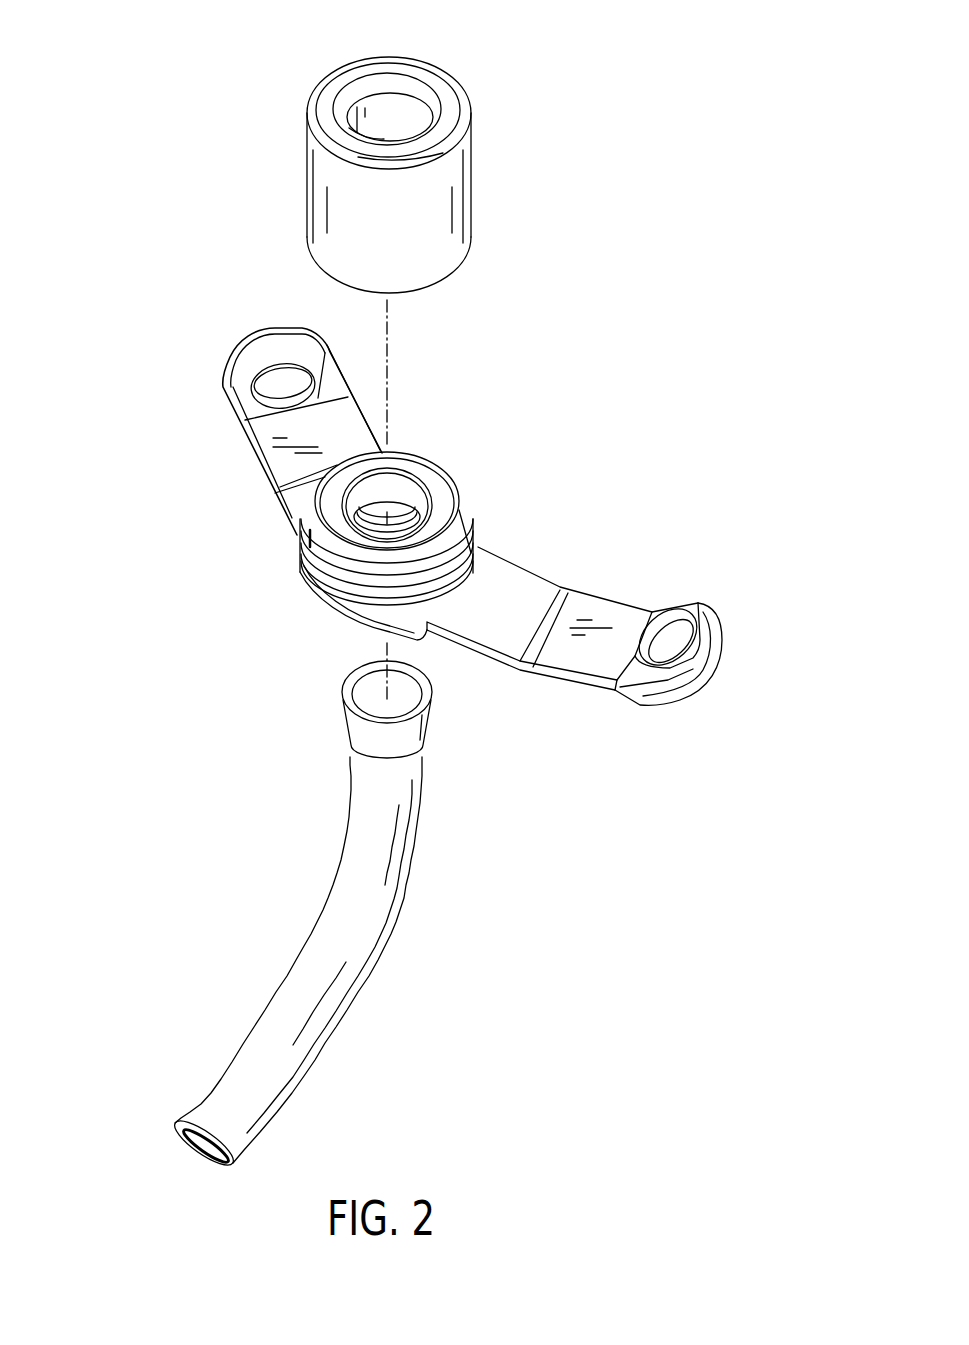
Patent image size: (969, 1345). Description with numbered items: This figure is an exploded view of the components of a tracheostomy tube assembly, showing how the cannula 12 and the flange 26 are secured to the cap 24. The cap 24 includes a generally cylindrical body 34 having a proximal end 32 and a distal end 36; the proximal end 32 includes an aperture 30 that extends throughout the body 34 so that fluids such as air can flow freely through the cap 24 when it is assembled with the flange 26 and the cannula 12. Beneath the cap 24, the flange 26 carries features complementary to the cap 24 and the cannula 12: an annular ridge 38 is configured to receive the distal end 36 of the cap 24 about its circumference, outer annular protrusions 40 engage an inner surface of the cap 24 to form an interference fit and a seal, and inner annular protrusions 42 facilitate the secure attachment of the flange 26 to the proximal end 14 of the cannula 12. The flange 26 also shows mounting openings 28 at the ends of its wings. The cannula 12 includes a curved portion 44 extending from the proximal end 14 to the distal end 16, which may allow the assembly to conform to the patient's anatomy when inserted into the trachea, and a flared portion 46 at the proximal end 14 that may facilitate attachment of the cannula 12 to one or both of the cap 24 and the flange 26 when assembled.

The cannula 12 is at (247, 1093).
The proximal end 14 is at (318, 713).
The distal end 16 is at (149, 1128).
The cap 24 is at (398, 240).
The flange 26 is at (536, 589).
The mounting holes 28 is at (282, 384).
The aperture 30 is at (389, 120).
The proximal end 32 is at (454, 64).
The cylindrical body 34 is at (470, 173).
The distal end 36 is at (419, 299).
The annular ridge 38 is at (468, 540).
The outer annular protrusions 40 is at (470, 536).
The inner annular protrusions 42 is at (412, 478).
The curved portion 44 is at (402, 928).
The flared portion 46 is at (433, 722).